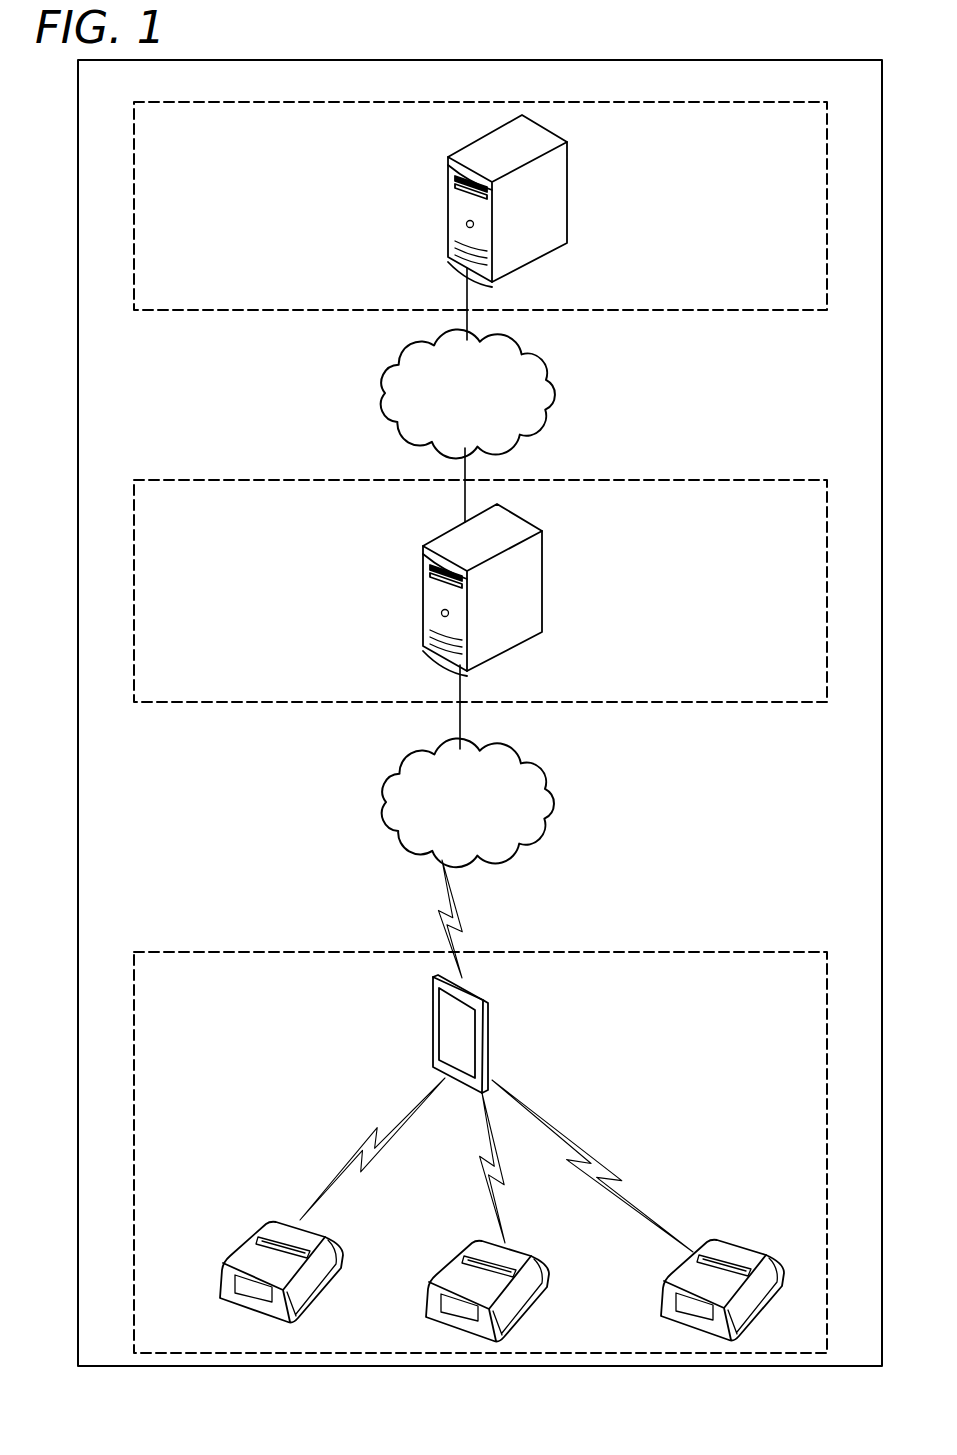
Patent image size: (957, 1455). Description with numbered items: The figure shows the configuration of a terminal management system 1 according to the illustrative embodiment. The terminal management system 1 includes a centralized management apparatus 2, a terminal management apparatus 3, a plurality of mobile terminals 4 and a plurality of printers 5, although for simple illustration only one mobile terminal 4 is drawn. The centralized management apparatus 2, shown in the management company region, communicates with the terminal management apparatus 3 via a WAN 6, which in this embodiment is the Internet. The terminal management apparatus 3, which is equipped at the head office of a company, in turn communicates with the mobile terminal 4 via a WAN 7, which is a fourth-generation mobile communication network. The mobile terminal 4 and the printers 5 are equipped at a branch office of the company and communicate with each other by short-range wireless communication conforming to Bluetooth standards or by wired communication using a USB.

The terminal management system 1 is at (798, 60).
The centralized management apparatus 2 is at (550, 218).
The terminal management apparatus 3 is at (523, 602).
The mobile terminal 4 is at (488, 1042).
The printer 5 is at (330, 1244).
The WAN 6 is at (549, 391).
The WAN 7 is at (535, 763).